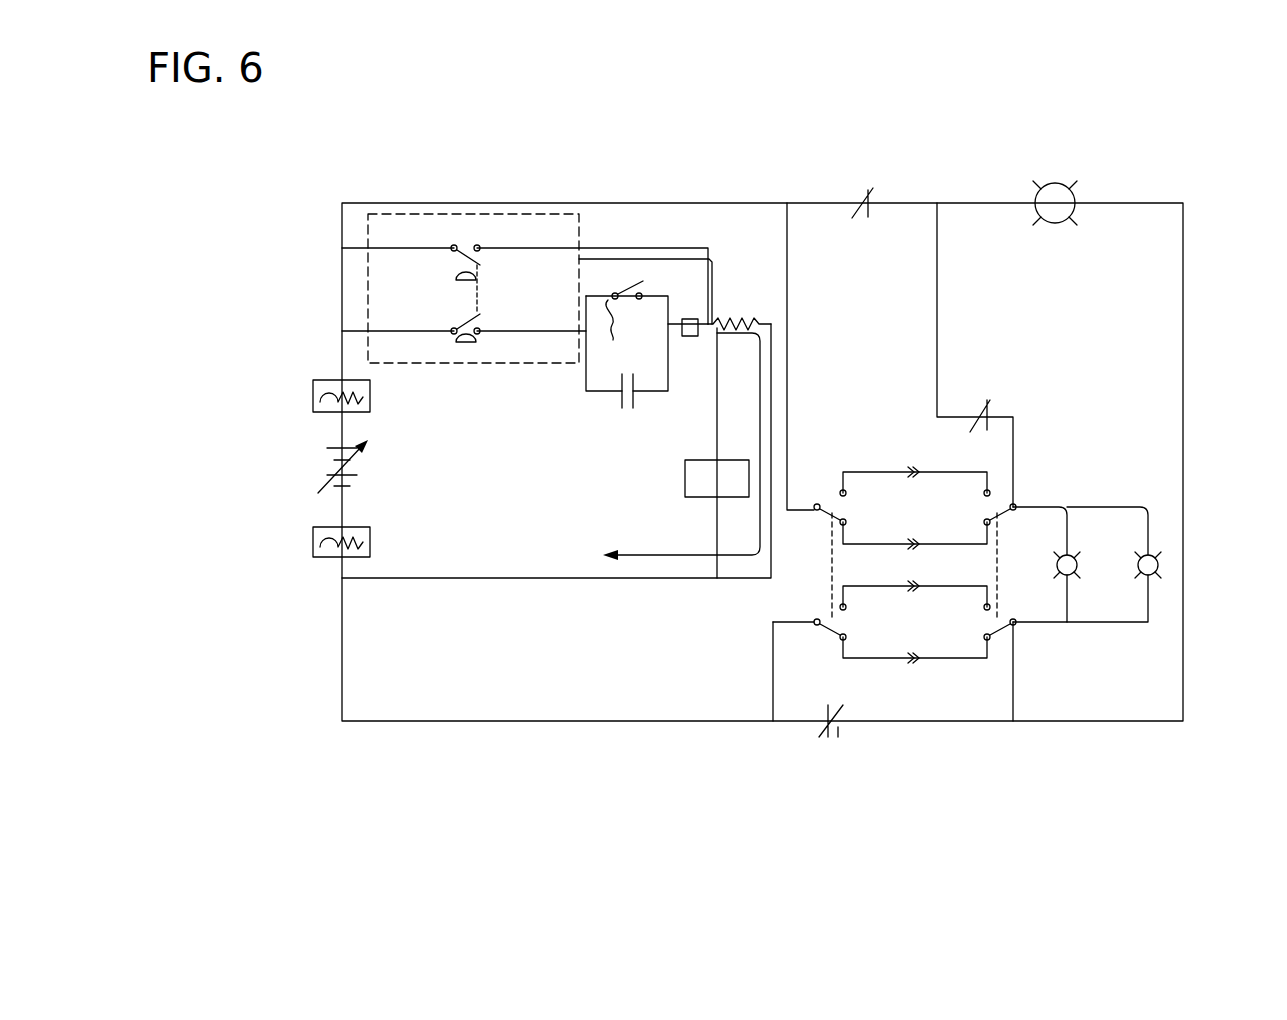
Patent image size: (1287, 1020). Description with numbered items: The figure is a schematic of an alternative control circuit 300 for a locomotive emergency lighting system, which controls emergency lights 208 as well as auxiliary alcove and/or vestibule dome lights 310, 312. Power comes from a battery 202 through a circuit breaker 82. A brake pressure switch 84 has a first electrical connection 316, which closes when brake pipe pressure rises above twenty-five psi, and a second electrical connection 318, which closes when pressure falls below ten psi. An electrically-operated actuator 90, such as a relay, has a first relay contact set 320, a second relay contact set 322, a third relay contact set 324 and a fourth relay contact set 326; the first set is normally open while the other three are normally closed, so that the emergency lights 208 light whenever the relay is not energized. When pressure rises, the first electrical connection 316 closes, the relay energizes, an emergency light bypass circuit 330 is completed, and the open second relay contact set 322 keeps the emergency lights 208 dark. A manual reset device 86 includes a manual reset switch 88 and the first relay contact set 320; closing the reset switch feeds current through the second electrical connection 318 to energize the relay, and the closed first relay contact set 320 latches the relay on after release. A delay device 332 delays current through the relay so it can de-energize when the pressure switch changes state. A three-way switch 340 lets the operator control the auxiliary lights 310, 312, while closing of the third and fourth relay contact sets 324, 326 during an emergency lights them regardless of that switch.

The control circuit 300 is at (1172, 118).
The brake pressure switch 84 is at (538, 212).
The first electrical connection 316 is at (460, 206).
The second electrical connection 318 is at (486, 373).
The manual reset device 86 is at (637, 272).
The manual reset switch 88 is at (627, 343).
The first relay contact set 320 is at (621, 396).
The delay device 332 is at (690, 336).
The electrically-operated actuator 90 is at (763, 318).
The emergency light bypass circuit 330 is at (655, 553).
The circuit breaker 82 is at (312, 383).
The battery 202 is at (300, 465).
The second relay contact set 322 is at (853, 187).
The fourth relay contact set 326 is at (840, 723).
The third relay contact set 324 is at (990, 408).
The emergency lights 208 is at (1055, 182).
The three-way switch 340 is at (898, 438).
The alcove and/or vestibule dome light 310 is at (1070, 548).
The alcove and/or vestibule dome light 312 is at (1152, 548).